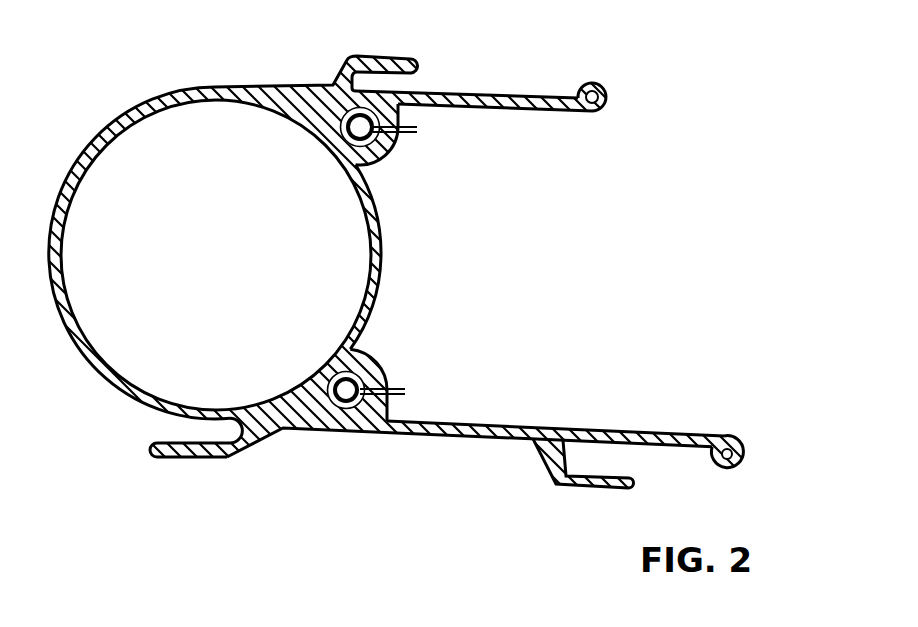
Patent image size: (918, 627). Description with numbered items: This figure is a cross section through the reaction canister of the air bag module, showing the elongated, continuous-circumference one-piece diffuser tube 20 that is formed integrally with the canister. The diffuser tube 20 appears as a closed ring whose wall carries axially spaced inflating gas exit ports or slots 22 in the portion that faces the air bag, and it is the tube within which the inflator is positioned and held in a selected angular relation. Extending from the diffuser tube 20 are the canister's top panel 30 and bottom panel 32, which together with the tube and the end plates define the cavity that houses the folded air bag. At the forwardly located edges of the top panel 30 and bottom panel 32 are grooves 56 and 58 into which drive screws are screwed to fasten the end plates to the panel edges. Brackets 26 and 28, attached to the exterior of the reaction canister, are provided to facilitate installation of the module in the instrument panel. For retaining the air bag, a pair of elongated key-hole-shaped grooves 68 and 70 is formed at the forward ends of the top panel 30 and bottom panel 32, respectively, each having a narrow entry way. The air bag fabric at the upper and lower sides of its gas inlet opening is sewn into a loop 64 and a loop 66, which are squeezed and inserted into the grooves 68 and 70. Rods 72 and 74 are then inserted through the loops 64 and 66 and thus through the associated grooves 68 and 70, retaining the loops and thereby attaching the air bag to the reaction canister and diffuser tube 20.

The diffuser tube 20 is at (117, 120).
The inflating gas exit ports 22 is at (382, 237).
The bracket 26 is at (170, 459).
The bracket 28 is at (620, 490).
The top panel 30 is at (467, 93).
The bottom panel 32 is at (465, 438).
The groove 56 is at (603, 88).
The groove 58 is at (742, 452).
The loop 64 is at (390, 163).
The loop 66 is at (370, 363).
The key hole shaped groove 68 is at (388, 140).
The key hole shaped groove 70 is at (407, 391).
The rod 72 is at (332, 87).
The rod 74 is at (330, 432).